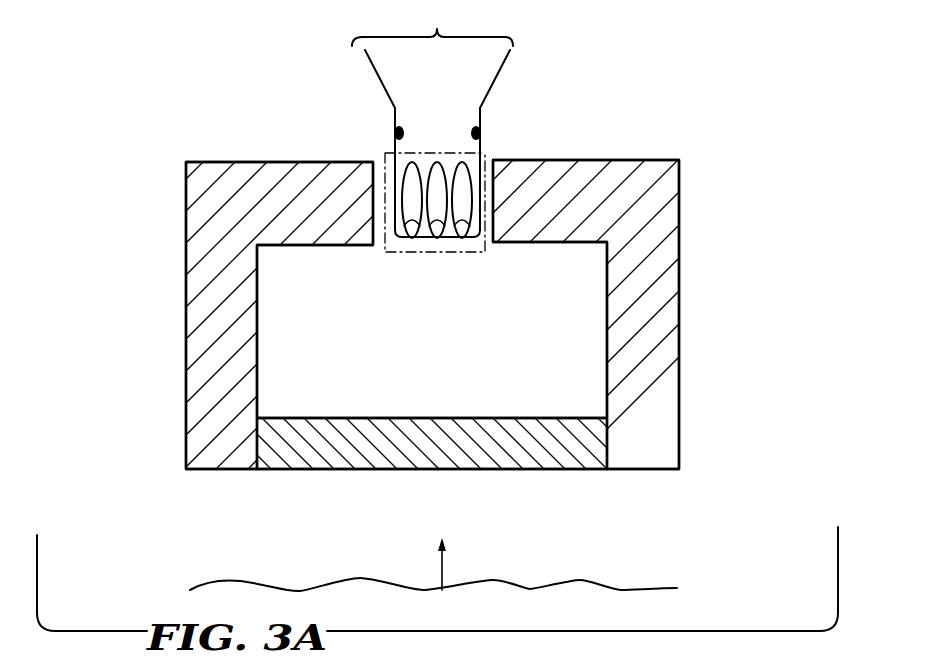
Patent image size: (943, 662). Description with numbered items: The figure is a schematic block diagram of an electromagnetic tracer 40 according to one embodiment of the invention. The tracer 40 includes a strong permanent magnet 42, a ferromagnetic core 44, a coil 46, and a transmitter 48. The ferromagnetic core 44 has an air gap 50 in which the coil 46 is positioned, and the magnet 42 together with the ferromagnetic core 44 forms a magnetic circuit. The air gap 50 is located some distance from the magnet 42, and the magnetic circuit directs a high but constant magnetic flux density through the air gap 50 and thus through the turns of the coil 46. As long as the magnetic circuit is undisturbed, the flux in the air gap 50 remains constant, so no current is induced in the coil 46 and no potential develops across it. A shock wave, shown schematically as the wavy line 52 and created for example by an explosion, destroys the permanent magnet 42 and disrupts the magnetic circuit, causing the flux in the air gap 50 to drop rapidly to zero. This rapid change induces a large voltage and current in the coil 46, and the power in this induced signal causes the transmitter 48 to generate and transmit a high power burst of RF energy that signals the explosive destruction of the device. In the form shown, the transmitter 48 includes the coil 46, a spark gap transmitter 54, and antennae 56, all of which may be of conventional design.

The electromagnetic tracer 40 is at (222, 139).
The permanent magnet 42 is at (400, 418).
The ferromagnetic core 44 is at (186, 306).
The coil 46 is at (487, 252).
The transmitter 48 is at (437, 30).
The air gap 50 is at (379, 155).
The wavy line 52 is at (625, 589).
The spark gap transmitter 54 is at (474, 130).
The antennae 56 is at (381, 83).